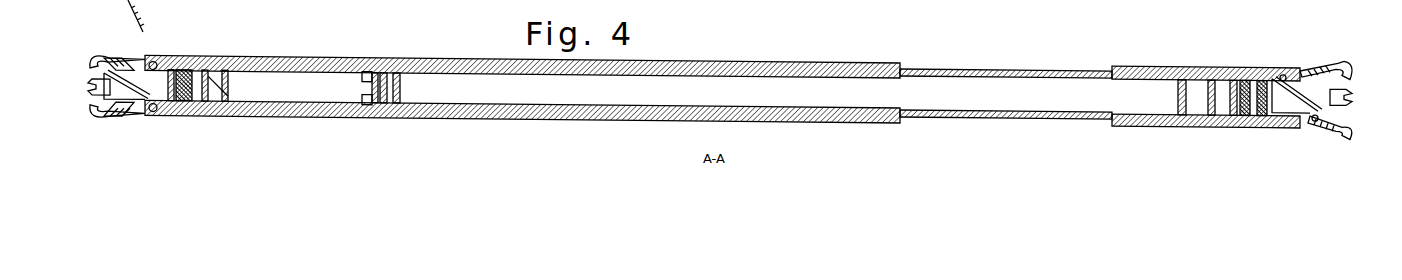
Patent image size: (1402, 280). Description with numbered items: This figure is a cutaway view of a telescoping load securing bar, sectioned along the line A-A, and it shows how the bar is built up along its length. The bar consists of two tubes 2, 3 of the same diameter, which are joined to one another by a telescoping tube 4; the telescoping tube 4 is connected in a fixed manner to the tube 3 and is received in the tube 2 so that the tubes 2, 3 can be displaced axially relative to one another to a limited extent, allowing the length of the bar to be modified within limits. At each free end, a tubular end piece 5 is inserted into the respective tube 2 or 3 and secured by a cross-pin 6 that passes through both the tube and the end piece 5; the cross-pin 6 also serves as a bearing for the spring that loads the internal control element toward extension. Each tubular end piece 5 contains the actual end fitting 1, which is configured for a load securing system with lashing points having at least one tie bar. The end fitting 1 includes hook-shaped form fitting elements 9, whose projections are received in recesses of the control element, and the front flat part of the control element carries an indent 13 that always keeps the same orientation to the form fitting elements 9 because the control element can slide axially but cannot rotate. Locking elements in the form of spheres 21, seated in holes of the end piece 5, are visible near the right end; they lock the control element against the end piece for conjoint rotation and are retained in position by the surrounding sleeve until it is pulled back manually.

The end fitting 1 is at (1313, 43).
The tube 2 is at (812, 62).
The tube 3 is at (1158, 68).
The telescoping tube 4 is at (996, 70).
The tubular end piece 5 is at (189, 68).
The cross-pin 6 is at (213, 84).
The hook-shaped form fitting element 9 is at (1336, 128).
The indent 13 is at (1350, 98).
The sphere 21 is at (1279, 118).